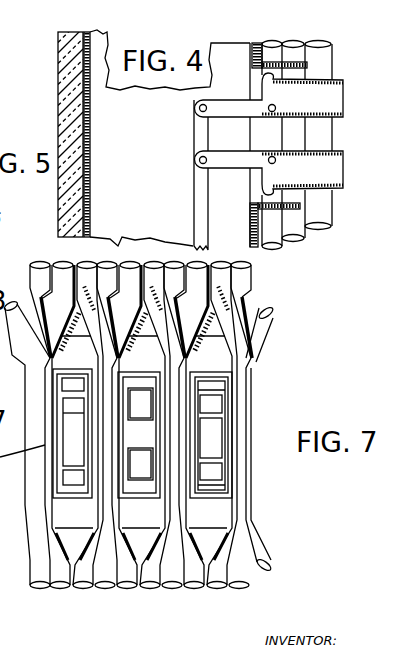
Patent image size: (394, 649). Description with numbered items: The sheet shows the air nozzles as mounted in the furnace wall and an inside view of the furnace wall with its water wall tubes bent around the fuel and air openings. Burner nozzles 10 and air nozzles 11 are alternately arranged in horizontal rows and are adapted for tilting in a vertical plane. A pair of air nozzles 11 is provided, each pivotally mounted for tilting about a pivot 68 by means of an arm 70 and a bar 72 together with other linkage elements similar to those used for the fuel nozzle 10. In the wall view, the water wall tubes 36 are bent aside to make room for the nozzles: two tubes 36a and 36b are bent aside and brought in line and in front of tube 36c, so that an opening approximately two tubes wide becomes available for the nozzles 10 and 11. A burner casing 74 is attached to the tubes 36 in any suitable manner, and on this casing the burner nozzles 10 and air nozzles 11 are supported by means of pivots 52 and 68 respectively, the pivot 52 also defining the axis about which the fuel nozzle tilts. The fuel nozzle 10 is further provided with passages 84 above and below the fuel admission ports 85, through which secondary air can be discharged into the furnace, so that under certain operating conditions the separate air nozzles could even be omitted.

In FIG. 7, the burner nozzle 10 is at (233, 403).
In FIG. 4, the air nozzle 11 is at (314, 130).
In FIG. 7, the air nozzle 11 is at (144, 392).
In FIG. 7, the water wall tubes 36 is at (273, 311).
In FIG. 4, the tube 36a is at (316, 43).
In FIG. 4, the tube 36b is at (288, 43).
In FIG. 4, the tube 36c is at (268, 43).
In FIG. 7, the pivot 52 is at (174, 433).
In FIG. 4, the pivot 68 is at (276, 109).
In FIG. 7, the pivot 68 is at (192, 437).
In FIG. 4, the arm 70 is at (240, 100).
In FIG. 4, the bar 72 is at (194, 186).
In FIG. 4, the burner casing 74 is at (302, 61).
In FIG. 7, the burner casing 74 is at (84, 492).
In FIG. 7, the passages 84 is at (210, 394).
In FIG. 7, the fuel admission ports 85 is at (70, 393).